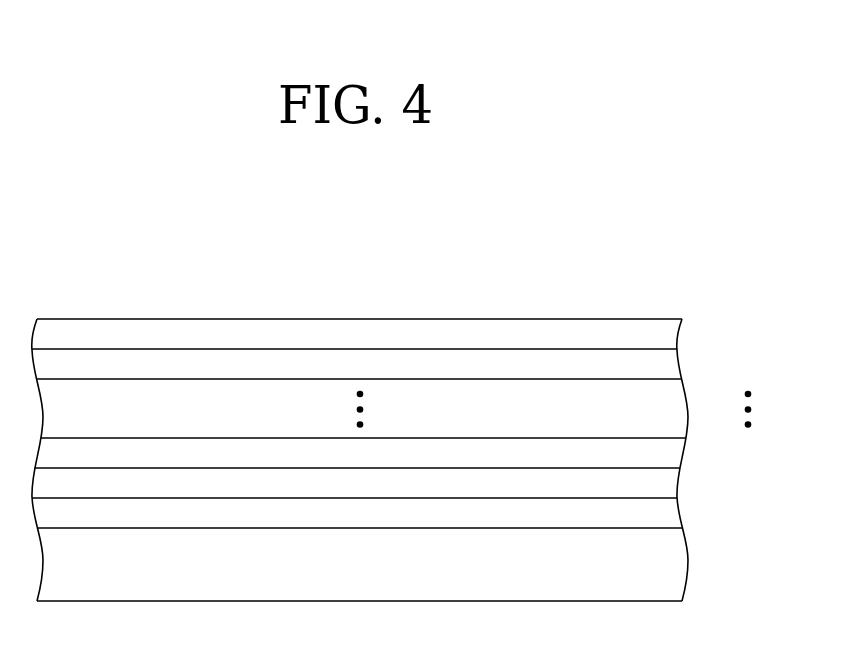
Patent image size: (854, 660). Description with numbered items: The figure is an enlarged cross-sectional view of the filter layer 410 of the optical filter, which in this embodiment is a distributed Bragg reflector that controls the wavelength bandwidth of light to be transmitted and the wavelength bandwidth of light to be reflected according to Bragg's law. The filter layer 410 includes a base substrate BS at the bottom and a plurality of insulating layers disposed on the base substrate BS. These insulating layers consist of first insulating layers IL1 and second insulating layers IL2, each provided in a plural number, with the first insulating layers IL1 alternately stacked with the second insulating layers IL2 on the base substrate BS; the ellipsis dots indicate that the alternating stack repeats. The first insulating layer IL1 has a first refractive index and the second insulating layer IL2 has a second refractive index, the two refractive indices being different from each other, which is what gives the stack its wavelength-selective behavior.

The filter layer 410 is at (600, 270).
The first insulating layer IL1 is at (668, 334).
The second insulating layer IL2 is at (668, 364).
The base substrate BS is at (683, 568).